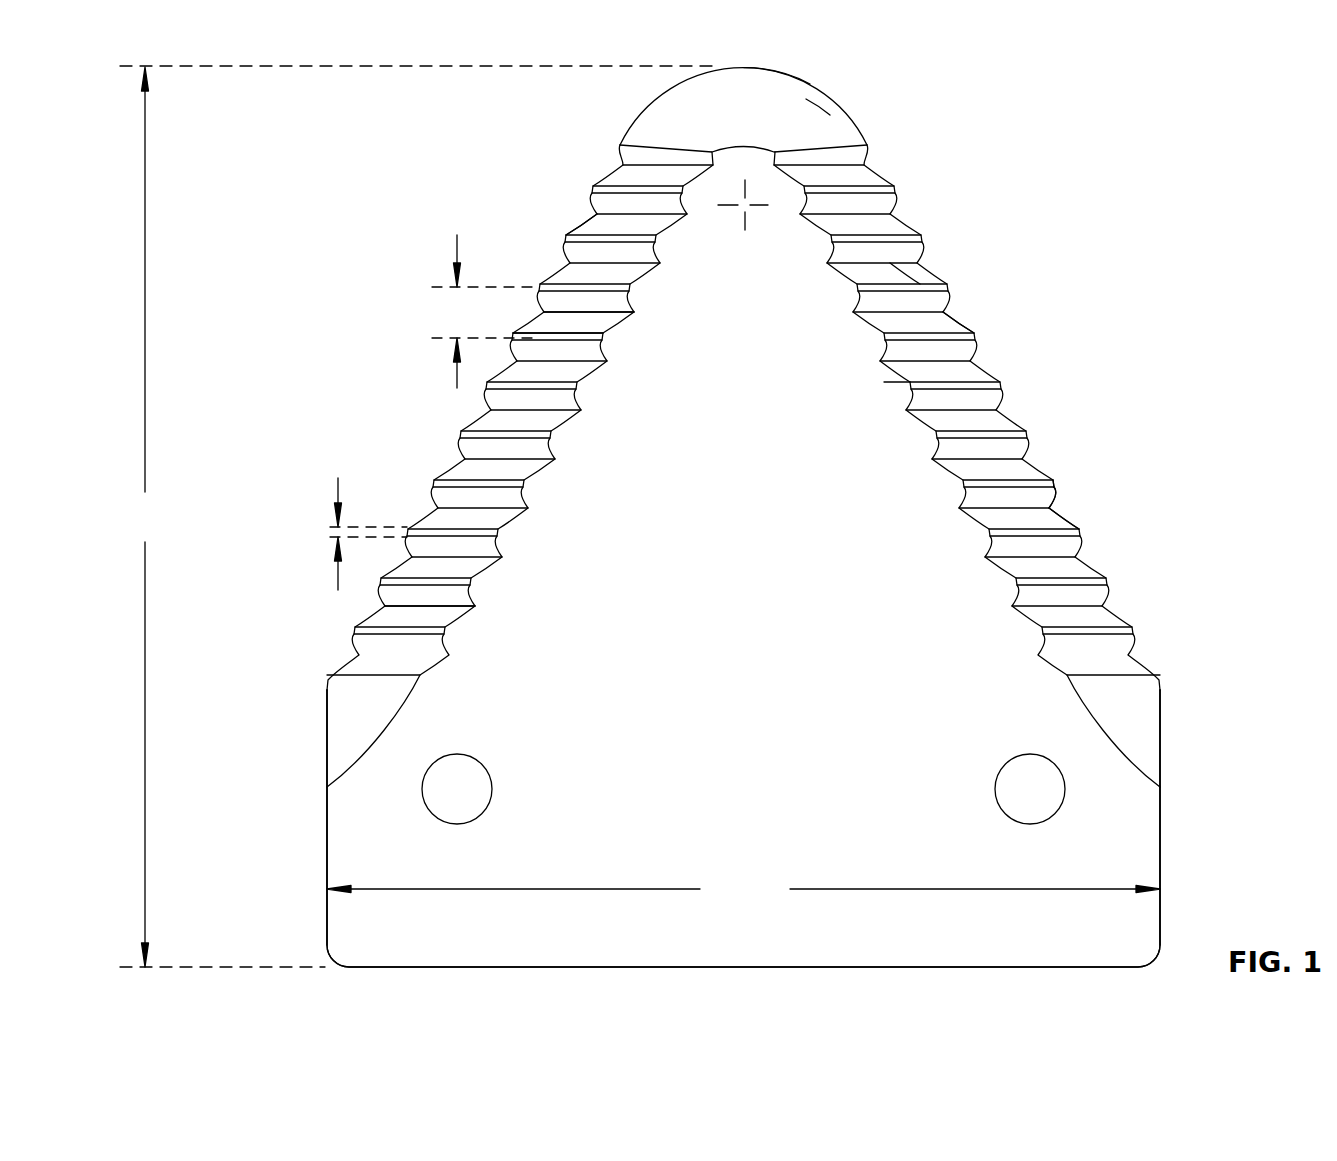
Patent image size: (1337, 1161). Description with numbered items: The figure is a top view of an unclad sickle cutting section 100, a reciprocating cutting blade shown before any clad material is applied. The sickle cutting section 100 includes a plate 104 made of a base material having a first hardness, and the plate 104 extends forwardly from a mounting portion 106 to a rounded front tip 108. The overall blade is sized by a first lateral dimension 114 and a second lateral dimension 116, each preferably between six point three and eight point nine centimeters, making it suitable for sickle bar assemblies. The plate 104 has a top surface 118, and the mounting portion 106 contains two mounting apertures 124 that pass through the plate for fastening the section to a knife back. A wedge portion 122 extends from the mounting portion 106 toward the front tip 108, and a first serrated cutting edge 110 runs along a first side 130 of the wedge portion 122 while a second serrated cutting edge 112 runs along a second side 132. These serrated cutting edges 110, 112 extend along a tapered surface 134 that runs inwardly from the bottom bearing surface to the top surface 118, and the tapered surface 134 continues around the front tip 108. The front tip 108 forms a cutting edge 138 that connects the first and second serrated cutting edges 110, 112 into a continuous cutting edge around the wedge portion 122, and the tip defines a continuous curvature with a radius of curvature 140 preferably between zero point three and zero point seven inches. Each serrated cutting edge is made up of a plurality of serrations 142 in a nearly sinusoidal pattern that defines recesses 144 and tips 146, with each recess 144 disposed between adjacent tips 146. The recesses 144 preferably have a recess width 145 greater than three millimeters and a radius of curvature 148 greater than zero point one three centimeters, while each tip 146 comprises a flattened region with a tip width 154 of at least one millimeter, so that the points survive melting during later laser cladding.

The sickle cutting section 100 is at (1163, 224).
The plate 104 is at (712, 410).
The mounting portion 106 is at (372, 922).
The front tip 108 is at (677, 95).
The first serrated cutting edge 110 is at (463, 440).
The second serrated cutting edge 112 is at (1026, 432).
The first lateral dimension 114 is at (416, 516).
The second lateral dimension 116 is at (743, 891).
The top surface 118 is at (583, 607).
The wedge portion 122 is at (878, 394).
The mounting aperture 124 is at (423, 803).
The first side 130 is at (327, 712).
The second side 132 is at (1160, 718).
The tapered surface 134 is at (603, 206).
The cutting edge 138 is at (745, 205).
The radius of curvature 140 is at (745, 205).
The serrations 142 is at (1062, 519).
The recess 144 is at (1052, 500).
The tip 146 is at (1053, 482).
The radius of curvature 148 is at (962, 300).
The recess width 145 is at (457, 252).
The tip width 154 is at (338, 488).